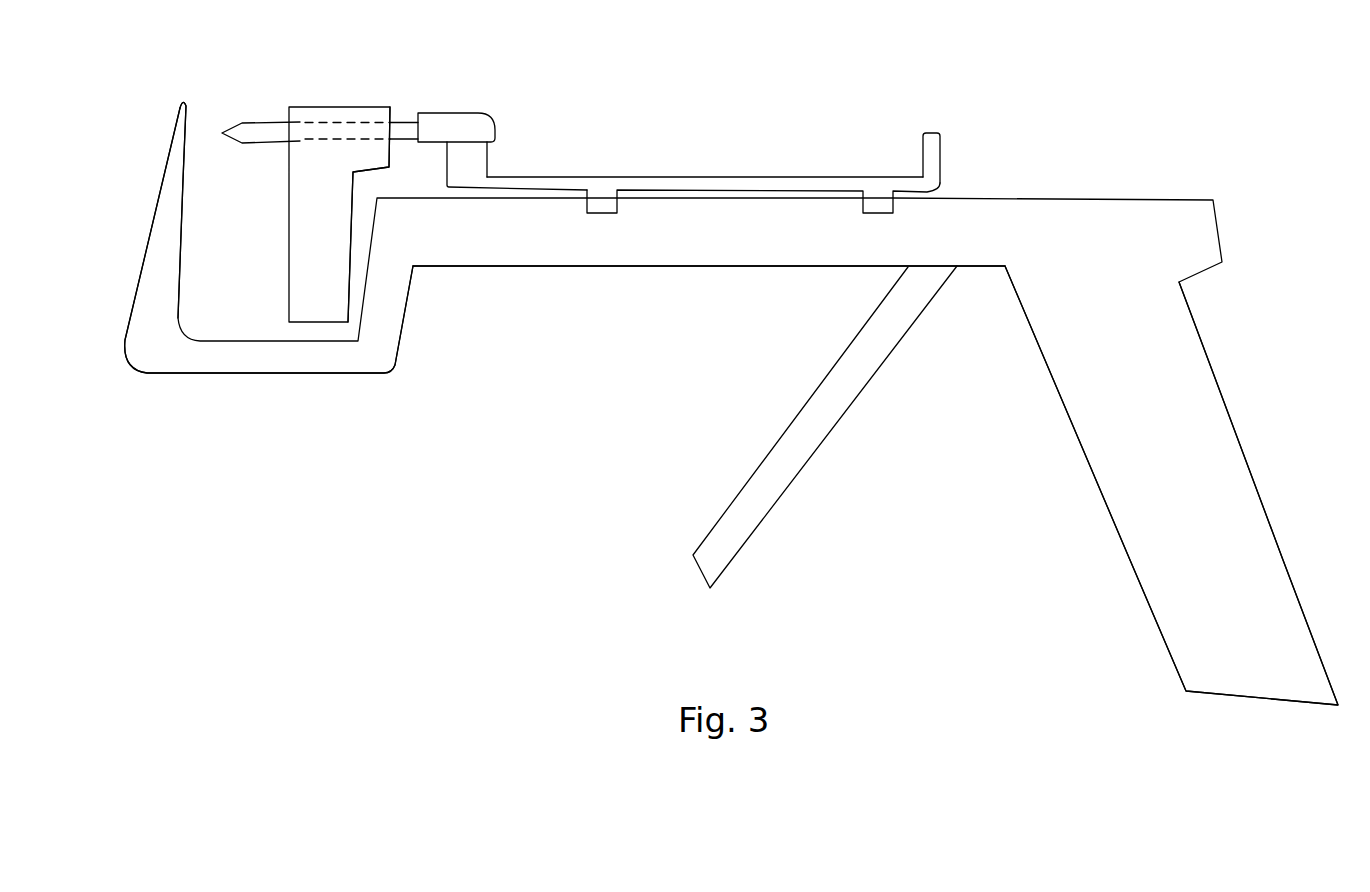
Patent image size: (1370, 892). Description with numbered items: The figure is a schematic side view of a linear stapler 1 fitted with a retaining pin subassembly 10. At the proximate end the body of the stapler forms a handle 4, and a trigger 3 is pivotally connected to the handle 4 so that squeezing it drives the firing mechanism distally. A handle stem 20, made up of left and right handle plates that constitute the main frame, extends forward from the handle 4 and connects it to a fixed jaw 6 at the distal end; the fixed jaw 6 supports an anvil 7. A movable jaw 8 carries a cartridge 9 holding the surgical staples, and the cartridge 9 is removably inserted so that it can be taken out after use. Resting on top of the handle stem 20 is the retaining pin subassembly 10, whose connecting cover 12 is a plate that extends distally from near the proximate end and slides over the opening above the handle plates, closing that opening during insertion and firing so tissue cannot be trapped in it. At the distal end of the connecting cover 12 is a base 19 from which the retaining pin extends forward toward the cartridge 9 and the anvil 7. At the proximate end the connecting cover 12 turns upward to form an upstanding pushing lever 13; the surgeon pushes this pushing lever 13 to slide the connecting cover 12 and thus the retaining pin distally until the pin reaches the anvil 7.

The linear stapler 1 is at (778, 100).
The trigger 3 is at (820, 447).
The handle 4 is at (1235, 428).
The fixed jaw 6 is at (140, 278).
The anvil 7 is at (183, 177).
The movable jaw 8 is at (393, 105).
The cartridge 9 is at (289, 107).
The retaining pin subassembly 10 is at (785, 153).
The connecting cover 12 is at (557, 178).
The pushing lever 13 is at (940, 155).
The base 19 is at (495, 133).
The handle stem 20 is at (653, 252).